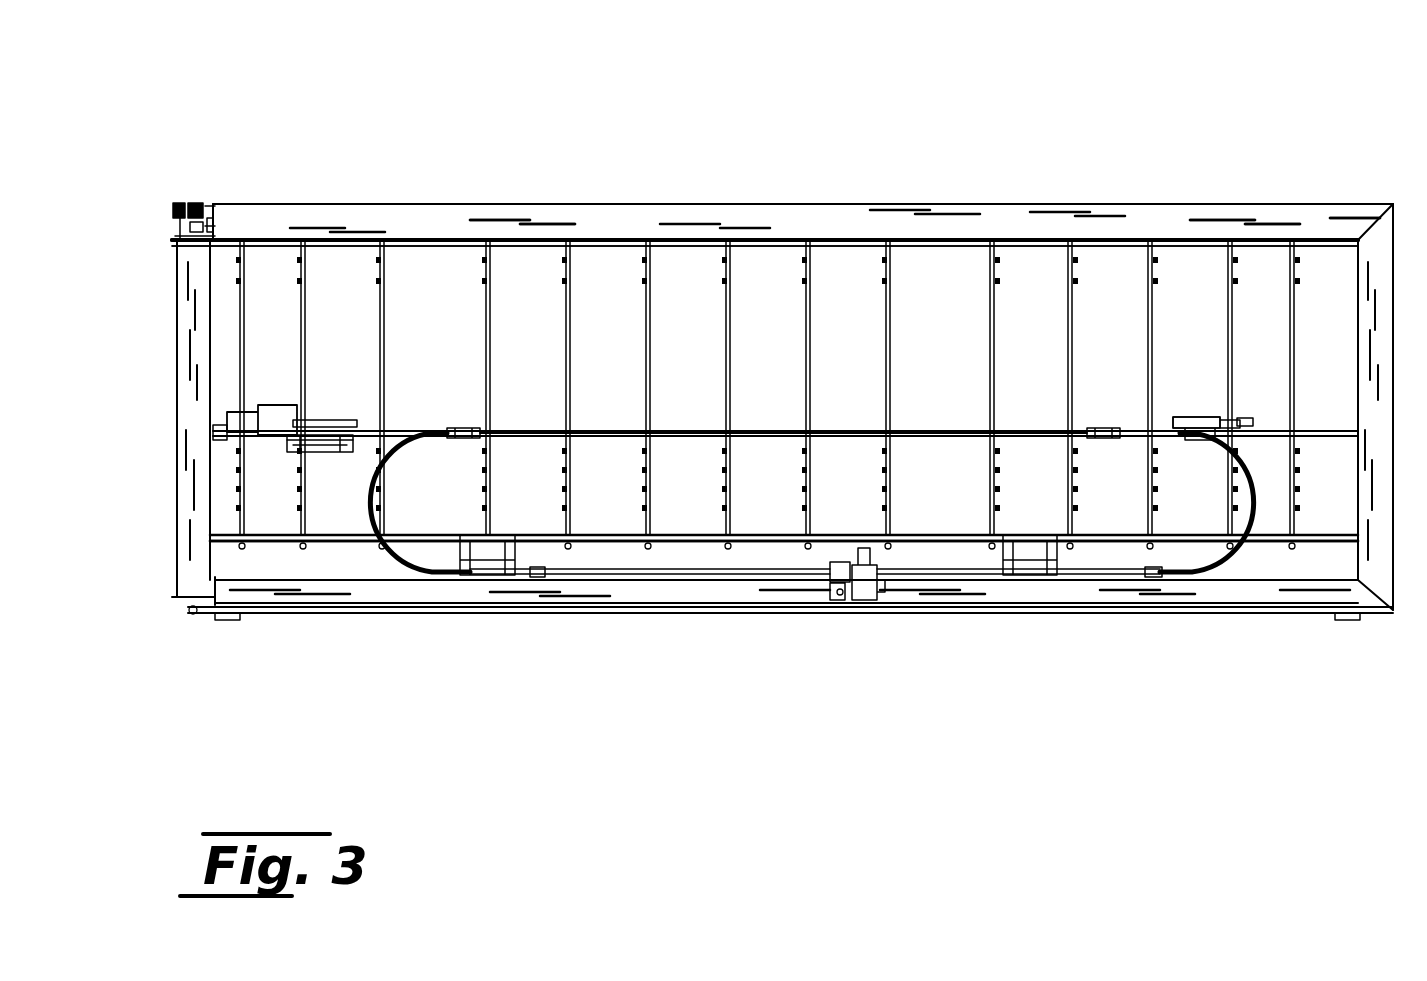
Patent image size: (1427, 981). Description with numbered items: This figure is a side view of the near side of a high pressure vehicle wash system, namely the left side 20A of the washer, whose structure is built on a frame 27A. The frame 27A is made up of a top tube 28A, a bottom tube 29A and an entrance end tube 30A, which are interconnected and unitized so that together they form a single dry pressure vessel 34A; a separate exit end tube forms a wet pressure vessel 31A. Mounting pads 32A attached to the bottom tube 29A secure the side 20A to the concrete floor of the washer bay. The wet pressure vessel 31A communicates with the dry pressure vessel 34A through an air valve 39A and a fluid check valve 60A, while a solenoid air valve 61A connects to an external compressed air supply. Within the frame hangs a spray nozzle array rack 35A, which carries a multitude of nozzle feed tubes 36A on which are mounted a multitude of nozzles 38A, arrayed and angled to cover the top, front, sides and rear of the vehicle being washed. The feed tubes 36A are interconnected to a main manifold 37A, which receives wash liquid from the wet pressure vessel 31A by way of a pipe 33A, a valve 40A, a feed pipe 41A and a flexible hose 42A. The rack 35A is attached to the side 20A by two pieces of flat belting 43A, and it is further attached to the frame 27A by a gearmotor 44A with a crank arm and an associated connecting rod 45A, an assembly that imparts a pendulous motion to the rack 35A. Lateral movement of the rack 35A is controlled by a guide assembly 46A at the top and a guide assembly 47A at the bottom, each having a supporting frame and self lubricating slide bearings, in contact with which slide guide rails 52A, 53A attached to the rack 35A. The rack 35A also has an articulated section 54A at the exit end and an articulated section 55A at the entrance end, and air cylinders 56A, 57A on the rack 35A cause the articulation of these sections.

The left side 20A is at (232, 148).
The frame 27A is at (926, 190).
The top tube 28A is at (553, 217).
The bottom tube 29A is at (958, 606).
The entrance end tube 30A is at (1388, 257).
The wet pressure vessel 31A is at (185, 572).
The mounting pads 32A is at (230, 620).
The pipe 33A is at (370, 610).
The dry pressure vessel 34A is at (1216, 182).
The spray nozzle array rack 35A is at (318, 266).
The nozzle feed tubes 36A is at (824, 322).
The main manifold 37A is at (937, 440).
The nozzles 38A is at (497, 238).
The air valve 39A is at (192, 207).
The valve 40A is at (833, 602).
The feed pipe 41A is at (657, 545).
The flexible hose 42A is at (395, 556).
The flat belting 43A is at (491, 428).
The gearmotor 44A is at (217, 430).
The connecting rod 45A is at (333, 420).
The guide assembly 46A is at (424, 226).
The guide assembly 47A is at (518, 577).
The guide rail 52A is at (913, 232).
The guide rail 53A is at (715, 545).
The articulated section 54A is at (200, 294).
The articulated section 55A is at (1332, 225).
The air cylinder 56A is at (337, 437).
The air cylinder 57A is at (1198, 418).
The check valve 60A is at (200, 212).
The solenoid air valve 61A is at (178, 214).